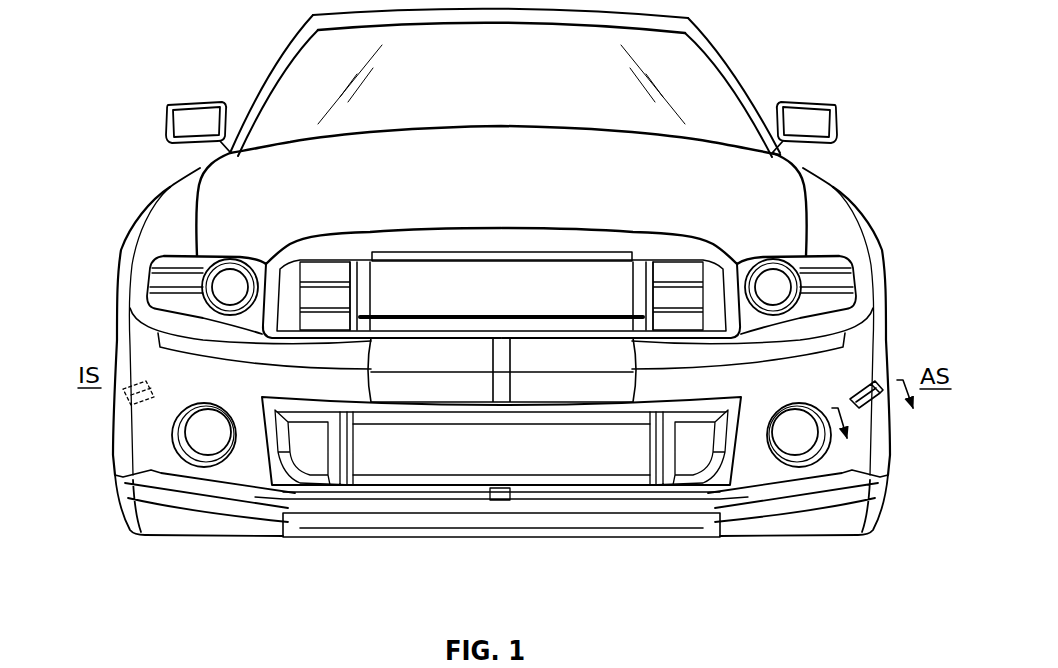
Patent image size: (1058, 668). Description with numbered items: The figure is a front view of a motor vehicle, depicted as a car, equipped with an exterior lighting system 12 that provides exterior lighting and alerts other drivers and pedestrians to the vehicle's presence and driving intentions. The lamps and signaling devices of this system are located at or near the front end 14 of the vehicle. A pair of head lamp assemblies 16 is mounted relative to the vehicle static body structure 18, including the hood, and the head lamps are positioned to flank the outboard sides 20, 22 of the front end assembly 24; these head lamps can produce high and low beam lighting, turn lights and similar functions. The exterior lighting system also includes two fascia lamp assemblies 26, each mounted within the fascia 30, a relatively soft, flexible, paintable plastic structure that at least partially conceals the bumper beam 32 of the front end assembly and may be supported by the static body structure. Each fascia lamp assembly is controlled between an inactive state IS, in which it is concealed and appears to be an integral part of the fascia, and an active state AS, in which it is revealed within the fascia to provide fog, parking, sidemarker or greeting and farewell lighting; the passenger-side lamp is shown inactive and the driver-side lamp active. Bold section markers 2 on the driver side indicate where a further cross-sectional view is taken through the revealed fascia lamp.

The exterior lighting system 12 is at (127, 270).
The front end 14 is at (395, 538).
The head lamp assembly 16 is at (180, 281).
The vehicle static body structure 18 is at (188, 182).
The outboard side 20 is at (117, 320).
The outboard side 22 is at (890, 305).
The front end assembly 24 is at (529, 342).
The fascia lamp assembly 26 is at (138, 410).
The fascia 30 is at (865, 363).
The bumper beam 32 is at (571, 388).
The section line for FIG. 2 is at (881, 427).